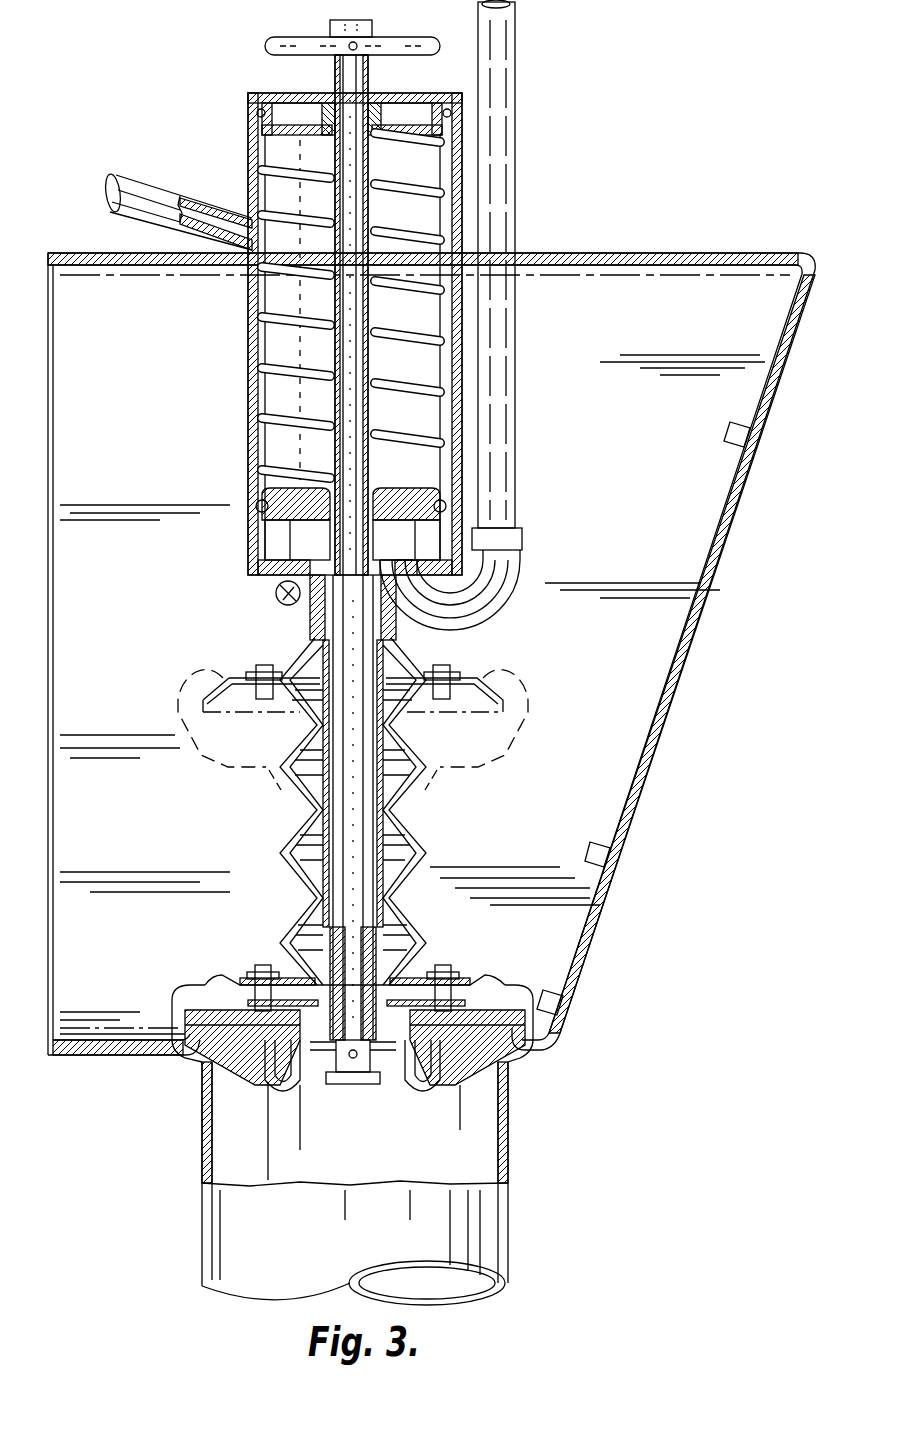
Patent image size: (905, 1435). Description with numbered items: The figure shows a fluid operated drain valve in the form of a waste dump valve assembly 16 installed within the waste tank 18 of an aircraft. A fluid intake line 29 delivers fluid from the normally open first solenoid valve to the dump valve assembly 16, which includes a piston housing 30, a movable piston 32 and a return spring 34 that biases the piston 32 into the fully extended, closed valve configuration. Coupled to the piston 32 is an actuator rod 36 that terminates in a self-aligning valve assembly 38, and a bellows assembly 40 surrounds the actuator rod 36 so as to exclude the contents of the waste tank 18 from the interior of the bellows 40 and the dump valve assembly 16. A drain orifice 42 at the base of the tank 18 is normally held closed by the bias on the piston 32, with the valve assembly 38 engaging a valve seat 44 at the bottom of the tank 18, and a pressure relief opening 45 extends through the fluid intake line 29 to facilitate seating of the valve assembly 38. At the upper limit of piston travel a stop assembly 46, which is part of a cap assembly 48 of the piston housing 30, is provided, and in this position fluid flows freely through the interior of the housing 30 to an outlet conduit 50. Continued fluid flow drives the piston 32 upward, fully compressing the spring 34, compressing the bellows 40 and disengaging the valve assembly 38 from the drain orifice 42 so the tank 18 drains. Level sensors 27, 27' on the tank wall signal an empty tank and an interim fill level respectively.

The waste dump valve assembly 16 is at (302, 20).
The waste tank 18 is at (640, 452).
The level sensor 27 is at (585, 1009).
The level sensor 27' is at (777, 438).
The fluid intake line 29 is at (518, 133).
The piston housing 30 is at (248, 390).
The movable piston 32 is at (440, 215).
The return spring 34 is at (258, 320).
The actuator rod 36 is at (352, 632).
The self-aligning valve assembly 38 is at (512, 690).
The bellows assembly 40 is at (290, 662).
The drain orifice 42 is at (505, 1158).
The valve seat 44 is at (195, 1062).
The pressure relief opening 45 is at (356, 1086).
The stop assembly 46 is at (262, 158).
The cap assembly 48 is at (275, 95).
The outlet conduit 50 is at (140, 180).